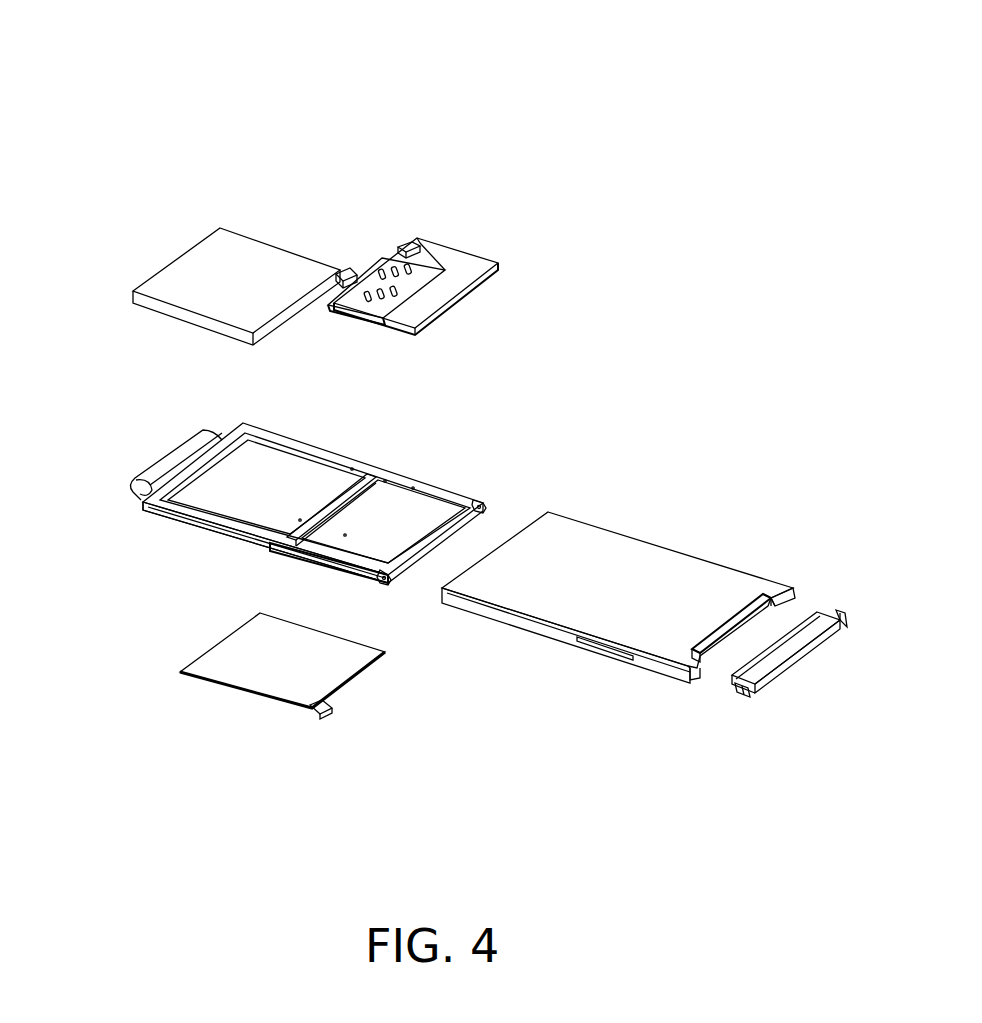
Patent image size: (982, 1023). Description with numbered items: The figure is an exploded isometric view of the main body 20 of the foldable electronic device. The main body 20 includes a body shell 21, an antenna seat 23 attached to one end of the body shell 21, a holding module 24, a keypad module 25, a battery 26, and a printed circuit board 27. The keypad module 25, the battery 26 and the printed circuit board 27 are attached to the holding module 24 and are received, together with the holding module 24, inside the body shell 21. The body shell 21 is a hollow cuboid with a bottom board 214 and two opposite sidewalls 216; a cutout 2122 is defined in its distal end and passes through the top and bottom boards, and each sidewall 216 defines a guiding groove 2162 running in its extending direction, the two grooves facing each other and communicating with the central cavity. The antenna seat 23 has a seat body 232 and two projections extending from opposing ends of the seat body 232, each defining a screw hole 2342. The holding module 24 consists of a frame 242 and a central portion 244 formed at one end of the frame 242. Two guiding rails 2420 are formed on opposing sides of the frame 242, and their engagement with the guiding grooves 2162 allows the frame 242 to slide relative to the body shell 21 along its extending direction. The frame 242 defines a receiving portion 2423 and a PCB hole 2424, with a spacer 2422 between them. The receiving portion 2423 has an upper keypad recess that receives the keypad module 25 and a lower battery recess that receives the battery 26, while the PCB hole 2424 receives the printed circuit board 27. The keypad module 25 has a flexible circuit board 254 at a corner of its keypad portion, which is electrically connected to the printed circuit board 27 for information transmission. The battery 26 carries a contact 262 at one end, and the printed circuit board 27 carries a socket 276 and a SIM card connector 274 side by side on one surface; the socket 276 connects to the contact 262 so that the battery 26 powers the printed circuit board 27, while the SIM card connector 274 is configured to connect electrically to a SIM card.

The main body 20 is at (430, 41).
The body shell 21 is at (586, 500).
The bottom board 214 is at (605, 546).
The sidewall 216 is at (500, 617).
The cutout 2122 is at (727, 623).
The guiding groove 2162 is at (833, 573).
The antenna seat 23 is at (705, 694).
The seat body 232 is at (807, 634).
The screw hole 2342 is at (748, 695).
The holding module 24 is at (65, 440).
The frame 242 is at (147, 496).
The central portion 244 is at (167, 474).
The guiding rail 2420 is at (348, 578).
The spacer 2422 is at (300, 516).
The receiving portion 2423 is at (262, 465).
The PCB hole 2424 is at (410, 508).
The keypad module 25 is at (205, 695).
The flexible circuit board 254 is at (325, 713).
The battery 26 is at (233, 243).
The contact 262 is at (338, 268).
The printed circuit board 27 is at (480, 226).
The SIM card connector 274 is at (375, 312).
The socket 276 is at (405, 244).